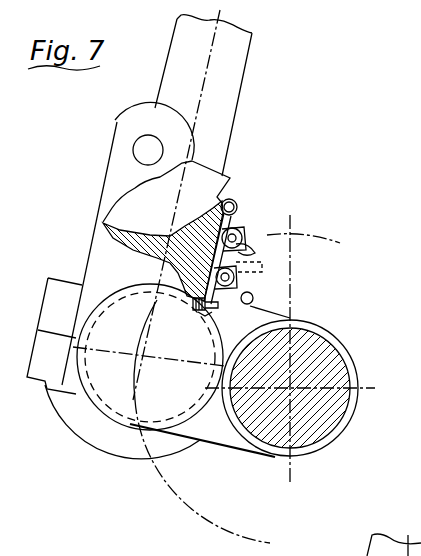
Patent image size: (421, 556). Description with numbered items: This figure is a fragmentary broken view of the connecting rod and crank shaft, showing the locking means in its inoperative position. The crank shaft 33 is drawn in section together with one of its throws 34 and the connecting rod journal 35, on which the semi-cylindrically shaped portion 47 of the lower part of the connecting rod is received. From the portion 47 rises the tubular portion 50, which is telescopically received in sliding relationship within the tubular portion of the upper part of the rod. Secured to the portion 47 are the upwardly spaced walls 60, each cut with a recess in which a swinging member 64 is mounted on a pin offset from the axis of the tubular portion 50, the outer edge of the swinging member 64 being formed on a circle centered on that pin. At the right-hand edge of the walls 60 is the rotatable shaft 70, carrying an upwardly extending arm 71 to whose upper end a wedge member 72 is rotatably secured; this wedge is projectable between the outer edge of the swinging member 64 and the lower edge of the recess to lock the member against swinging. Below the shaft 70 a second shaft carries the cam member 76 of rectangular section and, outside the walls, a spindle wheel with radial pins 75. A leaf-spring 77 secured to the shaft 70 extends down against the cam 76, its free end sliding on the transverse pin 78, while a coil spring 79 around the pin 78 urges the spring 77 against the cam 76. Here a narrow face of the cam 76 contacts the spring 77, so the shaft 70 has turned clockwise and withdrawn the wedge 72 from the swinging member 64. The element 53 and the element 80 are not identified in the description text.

The tubular portion 50 is at (243, 70).
The hole 53 is at (155, 136).
The walls 60 is at (128, 244).
The swinging member 64 is at (166, 231).
The semi-cylindrically shaped portion 47 is at (66, 292).
The wedge member 72 is at (233, 202).
The arm 71 is at (236, 216).
The shaft 70 is at (243, 231).
The leaf-spring 77 is at (252, 250).
The radial pins 75 is at (250, 268).
The cam member 76 is at (236, 281).
The pin 80 is at (253, 298).
The coil spring 79 is at (198, 312).
The transverse pin 78 is at (206, 318).
The crank shaft 33 is at (336, 374).
The connecting rod journal 35 is at (114, 408).
The throws 34 is at (232, 437).